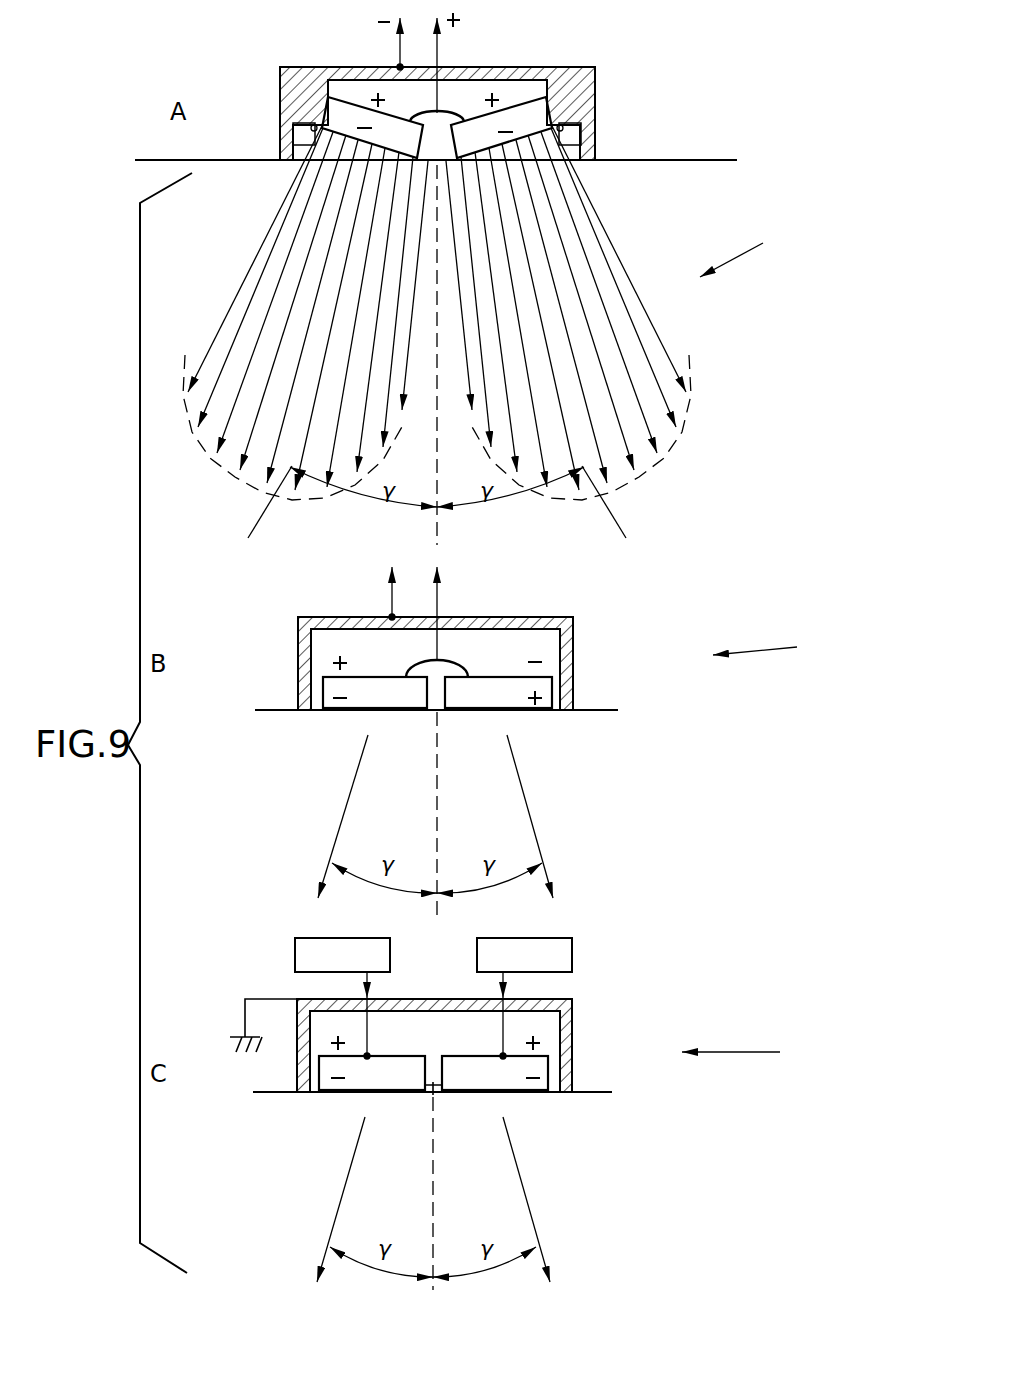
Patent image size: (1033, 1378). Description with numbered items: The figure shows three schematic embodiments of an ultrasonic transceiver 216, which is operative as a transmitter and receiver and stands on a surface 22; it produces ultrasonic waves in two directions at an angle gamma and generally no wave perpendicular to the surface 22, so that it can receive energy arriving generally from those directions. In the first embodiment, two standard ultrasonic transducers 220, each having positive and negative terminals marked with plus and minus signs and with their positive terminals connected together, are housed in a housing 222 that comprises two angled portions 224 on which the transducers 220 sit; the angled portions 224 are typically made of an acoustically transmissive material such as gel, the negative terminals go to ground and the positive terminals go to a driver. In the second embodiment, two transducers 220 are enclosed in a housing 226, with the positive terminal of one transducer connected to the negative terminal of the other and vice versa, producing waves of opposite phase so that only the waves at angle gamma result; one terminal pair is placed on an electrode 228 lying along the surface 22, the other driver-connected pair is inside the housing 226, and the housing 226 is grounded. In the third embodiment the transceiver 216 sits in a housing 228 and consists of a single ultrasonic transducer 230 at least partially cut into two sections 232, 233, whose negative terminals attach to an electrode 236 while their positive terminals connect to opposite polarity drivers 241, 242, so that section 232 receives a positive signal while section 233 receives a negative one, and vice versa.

The surface 22 is at (700, 158).
The ultrasonic transceiver 216 is at (765, 647).
The ultrasonic transducers 220 is at (344, 108).
The housing 222 is at (583, 92).
The angled portions 224 is at (595, 143).
The housing 226 is at (572, 637).
The electrode / housing 228 is at (553, 712).
The single ultrasonic transducer 230 is at (352, 1093).
The section 232 is at (406, 1088).
The section 233 is at (468, 1088).
The electrode 236 is at (528, 1093).
The driver 241 is at (295, 955).
The second driver circuit 242 is at (572, 950).